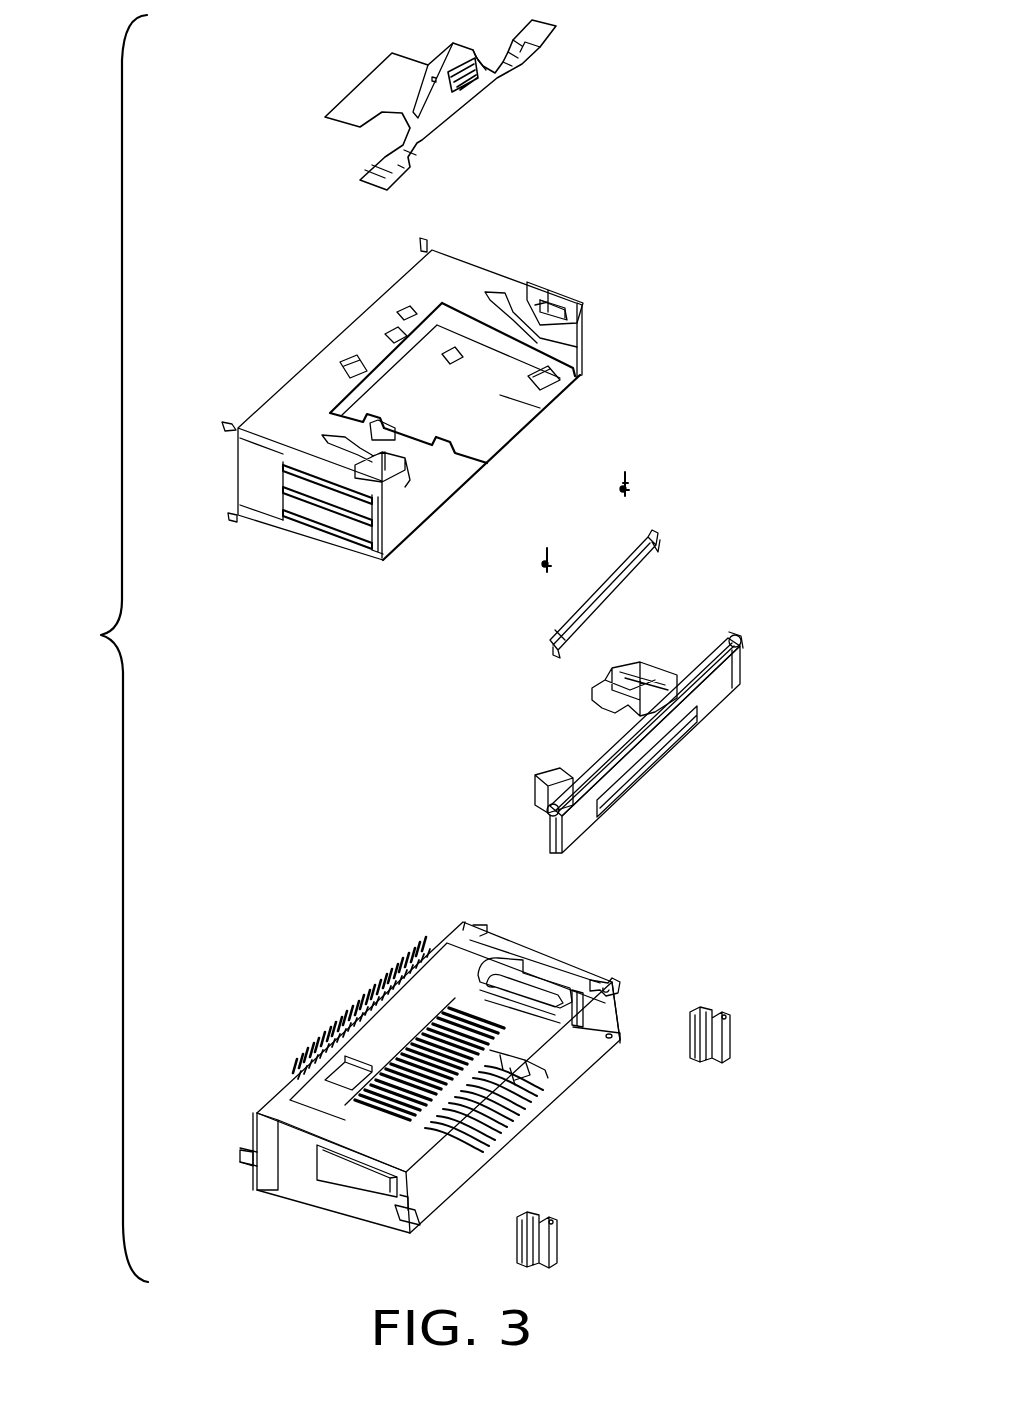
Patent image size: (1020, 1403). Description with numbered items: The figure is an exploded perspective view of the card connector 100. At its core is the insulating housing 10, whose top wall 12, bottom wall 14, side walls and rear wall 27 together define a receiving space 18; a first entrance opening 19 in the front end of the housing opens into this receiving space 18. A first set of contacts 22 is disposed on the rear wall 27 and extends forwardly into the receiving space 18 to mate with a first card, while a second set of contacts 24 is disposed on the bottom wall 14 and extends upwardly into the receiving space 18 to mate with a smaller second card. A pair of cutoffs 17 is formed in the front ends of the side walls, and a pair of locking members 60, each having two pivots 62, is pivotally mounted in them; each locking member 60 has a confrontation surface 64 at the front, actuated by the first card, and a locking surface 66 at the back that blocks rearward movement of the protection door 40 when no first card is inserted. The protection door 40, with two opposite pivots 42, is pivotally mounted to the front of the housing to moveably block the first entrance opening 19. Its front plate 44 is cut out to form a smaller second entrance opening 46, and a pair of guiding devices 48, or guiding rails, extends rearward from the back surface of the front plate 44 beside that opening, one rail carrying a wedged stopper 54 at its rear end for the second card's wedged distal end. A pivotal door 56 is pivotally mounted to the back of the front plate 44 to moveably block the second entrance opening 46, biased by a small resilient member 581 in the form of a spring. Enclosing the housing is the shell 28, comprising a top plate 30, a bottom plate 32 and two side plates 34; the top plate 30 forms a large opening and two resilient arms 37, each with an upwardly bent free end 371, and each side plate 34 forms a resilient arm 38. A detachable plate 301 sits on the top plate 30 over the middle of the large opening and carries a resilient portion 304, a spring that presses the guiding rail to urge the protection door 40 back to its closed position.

The card connector 100 is at (92, 648).
The detachable plate 301 is at (385, 78).
The resilient portion 304 is at (467, 73).
The shell 28 is at (397, 388).
The top plate 30 is at (367, 320).
The bottom plate 32 is at (507, 407).
The side plate 34 is at (262, 478).
The resilient arm 37 is at (517, 308).
The free end 371 is at (583, 347).
The resilient arm 38 is at (352, 518).
The resilient member 581 is at (632, 484).
The pivotal door 56 is at (653, 567).
The protection door 40 is at (633, 721).
The pivot 42 is at (707, 657).
The front plate 44 is at (717, 690).
The second entrance opening 46 is at (662, 753).
The guiding device 48 is at (540, 773).
The wedged stopper 54 is at (592, 690).
The insulating housing 10 is at (407, 1075).
The top wall 12 is at (463, 927).
The bottom wall 14 is at (573, 1075).
The cutoff 17 is at (397, 1195).
The receiving space 18 is at (513, 1017).
The first entrance opening 19 is at (577, 988).
The first set of contacts 22 is at (358, 1005).
The second set of contacts 24 is at (490, 1107).
The rear wall 27 is at (250, 1138).
The locking member 60 is at (757, 1016).
The pivot 62 is at (720, 1013).
The confrontation surface 64 is at (718, 1042).
The locking surface 66 is at (687, 1040).